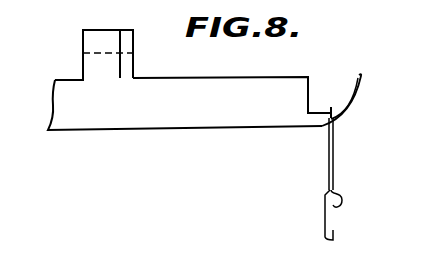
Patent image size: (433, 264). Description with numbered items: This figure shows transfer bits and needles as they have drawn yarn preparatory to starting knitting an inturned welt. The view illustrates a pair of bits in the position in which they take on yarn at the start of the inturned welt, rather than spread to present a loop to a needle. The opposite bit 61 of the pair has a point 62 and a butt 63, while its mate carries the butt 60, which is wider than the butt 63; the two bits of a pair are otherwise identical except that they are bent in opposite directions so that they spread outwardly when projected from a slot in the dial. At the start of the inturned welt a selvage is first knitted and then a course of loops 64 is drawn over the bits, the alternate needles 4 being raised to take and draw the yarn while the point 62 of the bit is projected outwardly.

The needle 4 is at (333, 228).
The butt 60 is at (135, 64).
The opposite bit 61 is at (216, 88).
The point 62 is at (352, 108).
The butt 63 is at (97, 40).
The loops 64 is at (334, 160).